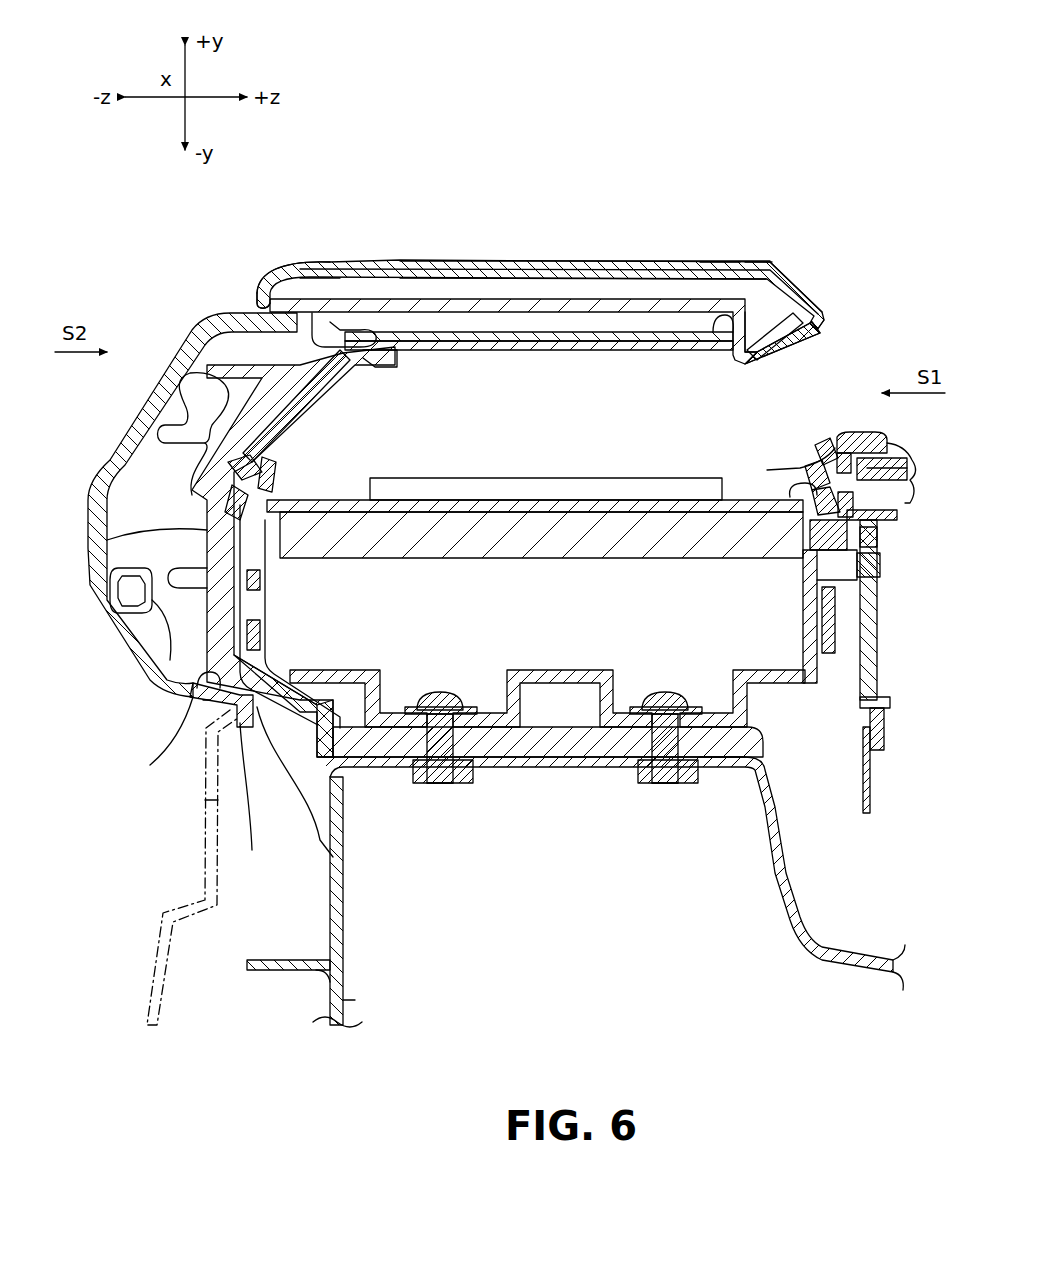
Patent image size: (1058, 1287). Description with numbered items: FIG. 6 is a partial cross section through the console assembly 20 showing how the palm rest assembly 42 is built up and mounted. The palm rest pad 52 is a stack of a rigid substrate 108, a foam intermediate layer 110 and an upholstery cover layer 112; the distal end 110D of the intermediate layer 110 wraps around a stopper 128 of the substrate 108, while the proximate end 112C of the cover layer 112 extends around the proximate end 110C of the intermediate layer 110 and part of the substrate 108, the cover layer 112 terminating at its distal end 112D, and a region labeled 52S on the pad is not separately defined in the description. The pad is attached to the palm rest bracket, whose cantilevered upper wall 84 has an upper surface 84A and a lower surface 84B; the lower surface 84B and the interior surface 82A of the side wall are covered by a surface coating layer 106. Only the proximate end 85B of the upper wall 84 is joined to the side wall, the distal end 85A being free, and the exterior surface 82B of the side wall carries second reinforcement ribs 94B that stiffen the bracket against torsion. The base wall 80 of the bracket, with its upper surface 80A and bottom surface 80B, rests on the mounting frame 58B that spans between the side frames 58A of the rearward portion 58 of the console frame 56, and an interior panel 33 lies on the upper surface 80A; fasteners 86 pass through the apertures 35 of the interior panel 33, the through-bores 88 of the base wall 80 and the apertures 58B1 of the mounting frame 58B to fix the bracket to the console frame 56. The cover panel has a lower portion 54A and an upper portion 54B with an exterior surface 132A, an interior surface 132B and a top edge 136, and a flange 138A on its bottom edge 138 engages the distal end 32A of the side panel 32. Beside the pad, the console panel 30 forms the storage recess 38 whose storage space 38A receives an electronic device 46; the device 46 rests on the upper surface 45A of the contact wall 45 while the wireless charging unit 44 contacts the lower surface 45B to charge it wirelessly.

The console assembly 20 is at (860, 152).
The palm rest assembly 42 is at (108, 202).
The substrate 108 is at (476, 262).
The intermediate layer 110 is at (530, 268).
The cover layer 112 is at (572, 266).
The distal end 110D is at (714, 307).
The stopper 128 is at (772, 316).
The palm rest pad 52 is at (812, 265).
The rear panel surface 52S is at (823, 310).
The distal end 112D is at (813, 333).
The distal end 85A is at (783, 357).
The proximate end 85B is at (352, 322).
The proximate end 112C is at (318, 312).
The top edge 136 is at (283, 290).
The proximate end 110C is at (262, 290).
The upper portion 54B is at (148, 322).
The second reinforcement ribs 94B is at (185, 415).
The interior surface 82A is at (250, 430).
The exterior surface 82B is at (175, 556).
The upper wall 84 is at (620, 353).
The surface coating layer 106 is at (660, 355).
The upper surface 84A is at (738, 362).
The lower surface 84B is at (703, 355).
The console panel 30 is at (868, 443).
The electronic device 46 is at (745, 500).
The storage space 38A is at (823, 497).
The storage recess 38 is at (878, 560).
The upper surface 45A is at (352, 518).
The lower surface 45B is at (440, 530).
The contact wall 45 is at (545, 560).
The wireless charging unit 44 is at (772, 558).
The interior panel 33 is at (272, 620).
The apertures 35 is at (402, 690).
The fasteners 86 is at (443, 705).
The upper surface 80A is at (770, 728).
The through-bores 88 is at (455, 775).
The apertures 58B1 is at (428, 790).
The base wall 80 is at (738, 790).
The bottom surface 80B is at (720, 790).
The bottom edge 138 is at (254, 800).
The flange 138A is at (333, 857).
The exterior surface 132A is at (150, 765).
The interior surface 132B is at (203, 700).
The distal end 32A is at (205, 800).
The side panels 32 is at (147, 1020).
The side frames 58A is at (318, 1005).
The mounting frame 58B is at (345, 998).
The rearward portion 58 is at (318, 1043).
The lower portion 54A is at (137, 700).
The console frame 56 is at (908, 992).